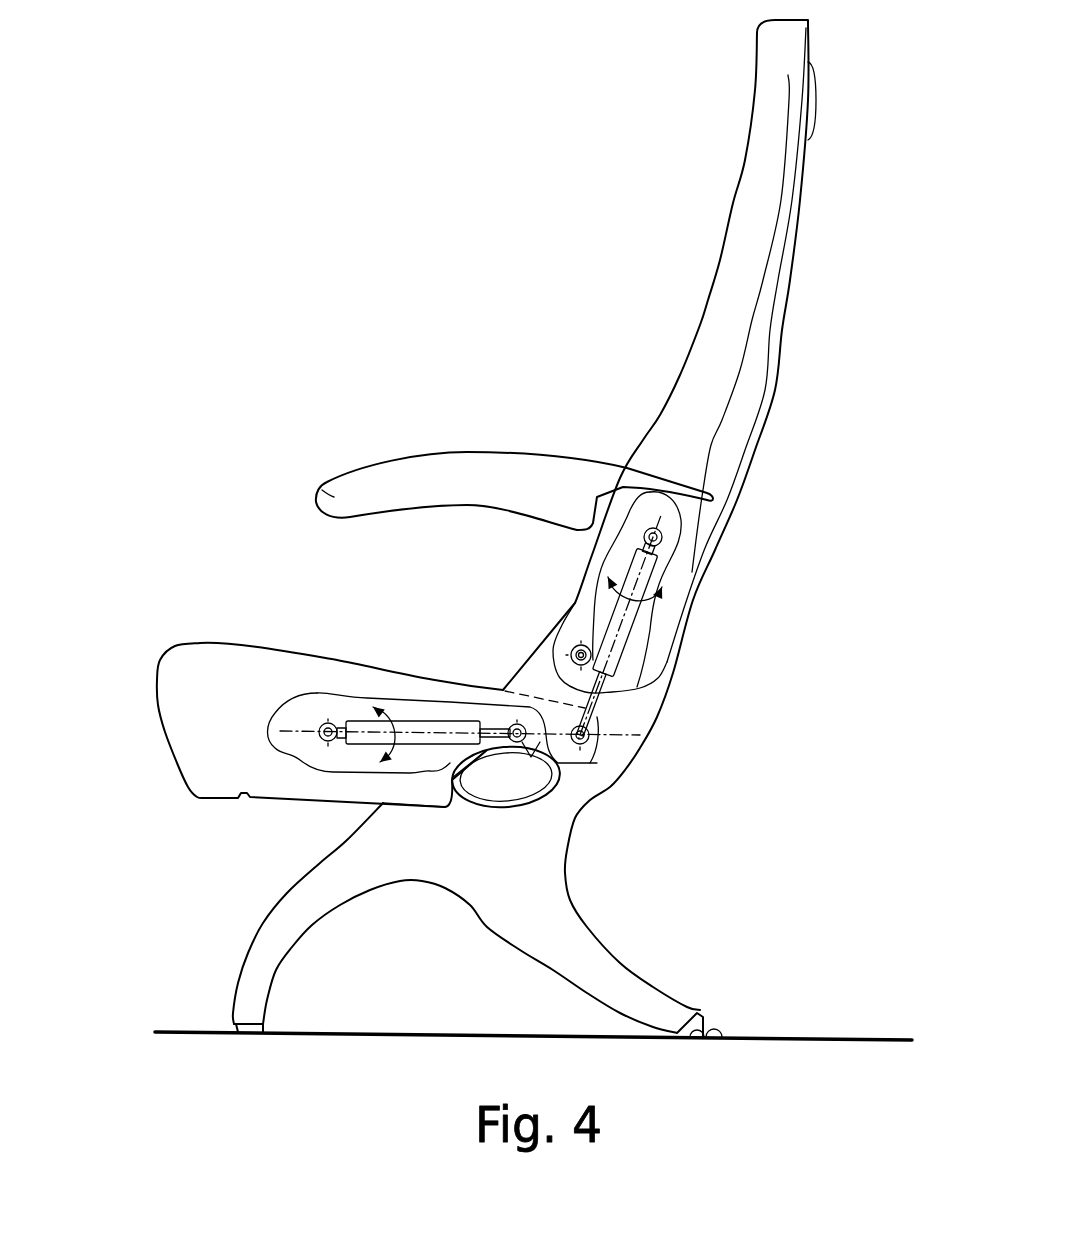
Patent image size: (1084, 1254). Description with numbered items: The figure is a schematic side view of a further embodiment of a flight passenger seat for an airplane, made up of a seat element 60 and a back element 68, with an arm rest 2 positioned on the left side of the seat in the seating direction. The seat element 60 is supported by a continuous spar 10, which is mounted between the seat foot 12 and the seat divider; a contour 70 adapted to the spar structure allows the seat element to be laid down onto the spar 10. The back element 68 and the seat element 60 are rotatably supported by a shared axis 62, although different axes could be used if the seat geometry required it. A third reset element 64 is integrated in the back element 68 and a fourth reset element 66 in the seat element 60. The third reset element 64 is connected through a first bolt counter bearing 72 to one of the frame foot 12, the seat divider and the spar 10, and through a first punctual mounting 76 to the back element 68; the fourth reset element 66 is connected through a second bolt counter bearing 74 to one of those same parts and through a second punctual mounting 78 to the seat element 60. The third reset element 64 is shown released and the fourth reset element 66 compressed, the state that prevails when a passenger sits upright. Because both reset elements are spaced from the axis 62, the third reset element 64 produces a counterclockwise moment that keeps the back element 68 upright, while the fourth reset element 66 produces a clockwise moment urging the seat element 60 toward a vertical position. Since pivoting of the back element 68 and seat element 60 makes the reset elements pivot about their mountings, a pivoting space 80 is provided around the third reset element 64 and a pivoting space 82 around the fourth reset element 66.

The arm rest 2 is at (332, 497).
The spar 10 is at (507, 800).
The seat foot 12 is at (272, 956).
The seat element 60 is at (218, 753).
The shared axis 62 is at (573, 650).
The third reset element 64 is at (658, 600).
The fourth reset element 66 is at (363, 723).
The back element 68 is at (747, 217).
The contour 70 is at (460, 813).
The first bolt counter bearing 72 is at (592, 761).
The second bolt counter bearing 74 is at (572, 768).
The first punctual mounting 76 is at (673, 537).
The second punctual mounting 78 is at (322, 713).
The pivoting space 80 is at (627, 613).
The pivoting space 82 is at (381, 758).